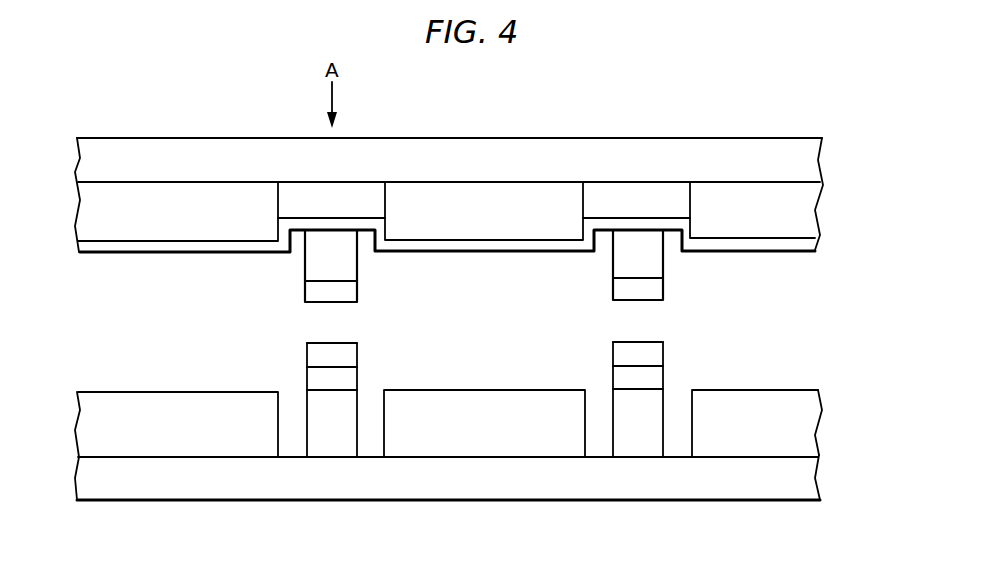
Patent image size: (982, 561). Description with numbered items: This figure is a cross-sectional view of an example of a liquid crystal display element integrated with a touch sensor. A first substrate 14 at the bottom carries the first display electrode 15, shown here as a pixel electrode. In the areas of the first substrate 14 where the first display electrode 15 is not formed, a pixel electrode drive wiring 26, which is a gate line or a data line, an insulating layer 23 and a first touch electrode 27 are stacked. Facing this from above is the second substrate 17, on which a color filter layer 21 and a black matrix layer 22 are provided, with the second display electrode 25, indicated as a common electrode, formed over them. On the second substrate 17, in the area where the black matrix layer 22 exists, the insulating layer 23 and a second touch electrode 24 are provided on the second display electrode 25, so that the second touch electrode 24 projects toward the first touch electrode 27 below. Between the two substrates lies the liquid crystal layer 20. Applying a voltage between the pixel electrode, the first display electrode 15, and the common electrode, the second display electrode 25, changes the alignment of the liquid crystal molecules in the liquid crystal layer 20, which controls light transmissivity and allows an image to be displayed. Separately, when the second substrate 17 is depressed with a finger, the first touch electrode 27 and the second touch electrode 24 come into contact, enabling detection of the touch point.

The first substrate 14 is at (808, 480).
The first display electrode 15 is at (805, 420).
The second substrate 17 is at (813, 152).
The liquid crystal layer 20 is at (141, 328).
The color filter layer 21 is at (812, 205).
The black matrix layer 22 is at (346, 212).
The insulating layer 23 is at (350, 266).
The second touch electrode 24 is at (350, 292).
The second display electrode 25 is at (816, 250).
The pixel electrode drive wiring 26 is at (346, 436).
The first touch electrode 27 is at (350, 353).